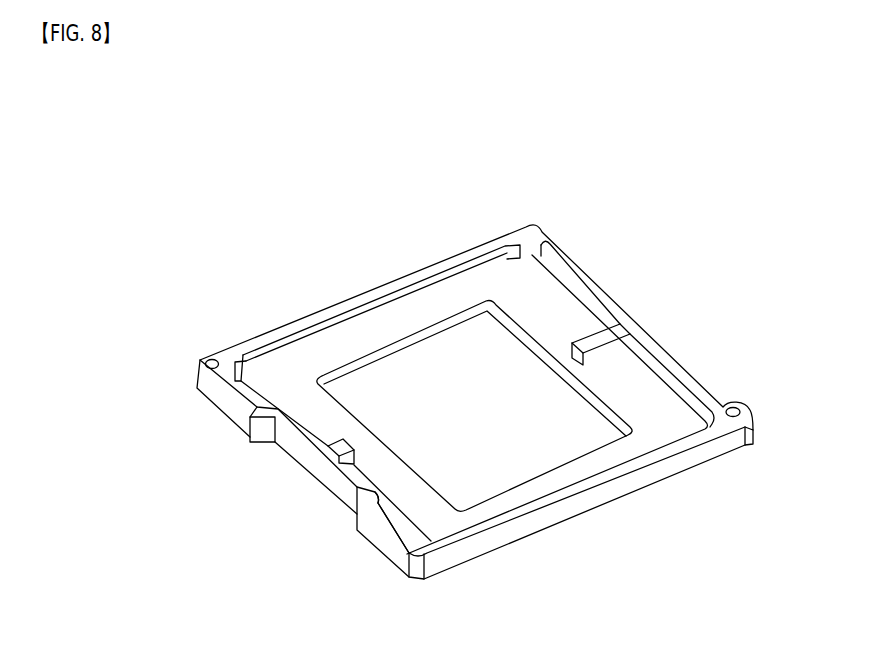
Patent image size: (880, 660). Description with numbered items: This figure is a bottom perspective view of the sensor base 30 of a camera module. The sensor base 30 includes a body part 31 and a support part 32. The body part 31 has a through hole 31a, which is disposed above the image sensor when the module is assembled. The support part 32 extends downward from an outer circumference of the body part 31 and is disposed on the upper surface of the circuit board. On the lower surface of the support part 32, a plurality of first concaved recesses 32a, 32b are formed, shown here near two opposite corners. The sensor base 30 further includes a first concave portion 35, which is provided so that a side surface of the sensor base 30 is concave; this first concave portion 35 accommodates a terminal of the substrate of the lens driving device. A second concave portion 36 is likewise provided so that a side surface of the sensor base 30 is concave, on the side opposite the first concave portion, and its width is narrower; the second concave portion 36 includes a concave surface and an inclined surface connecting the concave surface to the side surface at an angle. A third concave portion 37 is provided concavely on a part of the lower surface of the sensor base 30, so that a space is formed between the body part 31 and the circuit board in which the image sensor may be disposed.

The sensor base 30 is at (199, 146).
The body part 31 is at (282, 372).
The through hole 31a is at (478, 371).
The support part 32 is at (360, 297).
The first concaved recess 32a is at (211, 357).
The first concaved recess 32b is at (747, 428).
The first concave portion 35 is at (656, 336).
The second concave portion 36 is at (317, 470).
The third concave portion 37 is at (408, 514).